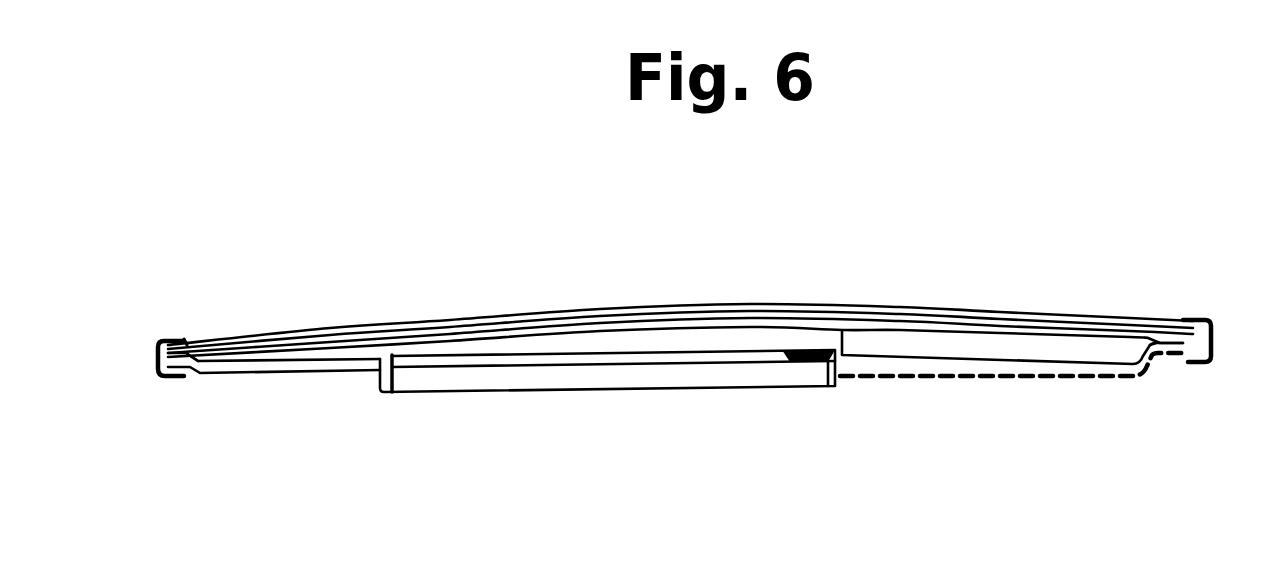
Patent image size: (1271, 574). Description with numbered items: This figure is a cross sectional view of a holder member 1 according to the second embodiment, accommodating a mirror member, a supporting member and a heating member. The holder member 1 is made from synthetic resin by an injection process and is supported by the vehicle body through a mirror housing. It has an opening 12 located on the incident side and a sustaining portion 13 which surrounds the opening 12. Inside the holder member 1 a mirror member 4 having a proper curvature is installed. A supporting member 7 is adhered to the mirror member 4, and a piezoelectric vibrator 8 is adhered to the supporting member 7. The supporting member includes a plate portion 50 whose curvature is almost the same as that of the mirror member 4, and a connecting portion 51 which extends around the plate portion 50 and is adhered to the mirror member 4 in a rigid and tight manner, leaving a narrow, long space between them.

The holder member 1 is at (900, 378).
The mirror member 4 is at (1117, 322).
The supporting member 7 is at (662, 326).
The piezoelectric vibrator 8 is at (1050, 352).
The opening 12 is at (176, 340).
The sustaining portion 13 is at (1197, 318).
The plate portion 50 is at (700, 332).
The connecting portion 51 is at (186, 355).